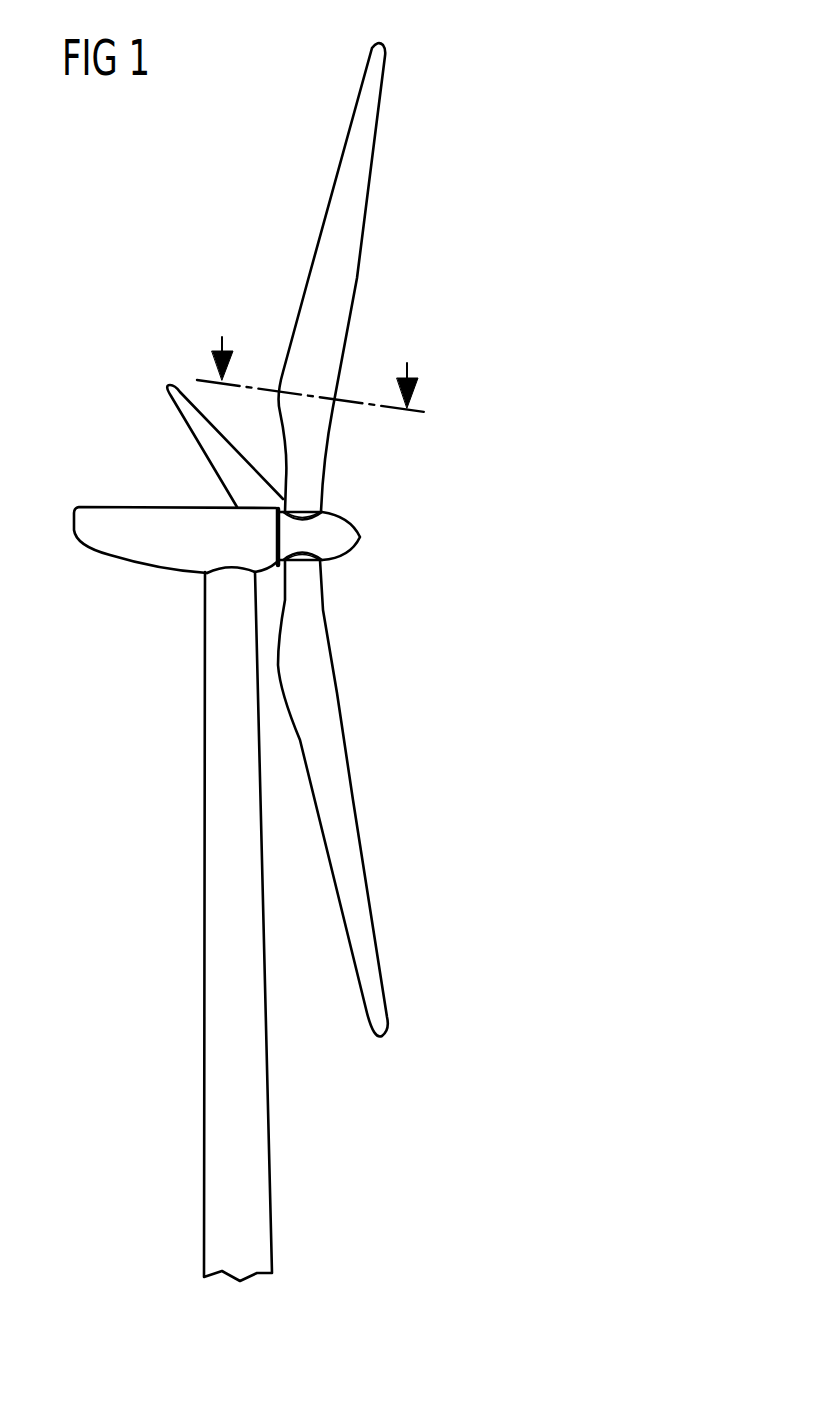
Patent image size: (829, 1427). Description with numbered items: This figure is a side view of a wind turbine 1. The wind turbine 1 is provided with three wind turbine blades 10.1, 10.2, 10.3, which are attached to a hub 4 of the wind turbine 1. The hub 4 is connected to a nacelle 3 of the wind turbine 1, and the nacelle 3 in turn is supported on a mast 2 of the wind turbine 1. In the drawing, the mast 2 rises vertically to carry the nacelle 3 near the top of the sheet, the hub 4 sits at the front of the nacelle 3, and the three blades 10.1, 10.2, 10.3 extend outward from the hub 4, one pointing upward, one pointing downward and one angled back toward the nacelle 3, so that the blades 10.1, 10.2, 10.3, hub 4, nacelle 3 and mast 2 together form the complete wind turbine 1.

The wind turbine 1 is at (118, 339).
The mast 2 is at (218, 910).
The nacelle 3 is at (122, 505).
The hub 4 is at (352, 537).
The wind turbine blade 10.1 is at (342, 275).
The wind turbine blade 10.2 is at (327, 722).
The wind turbine blade 10.3 is at (164, 398).